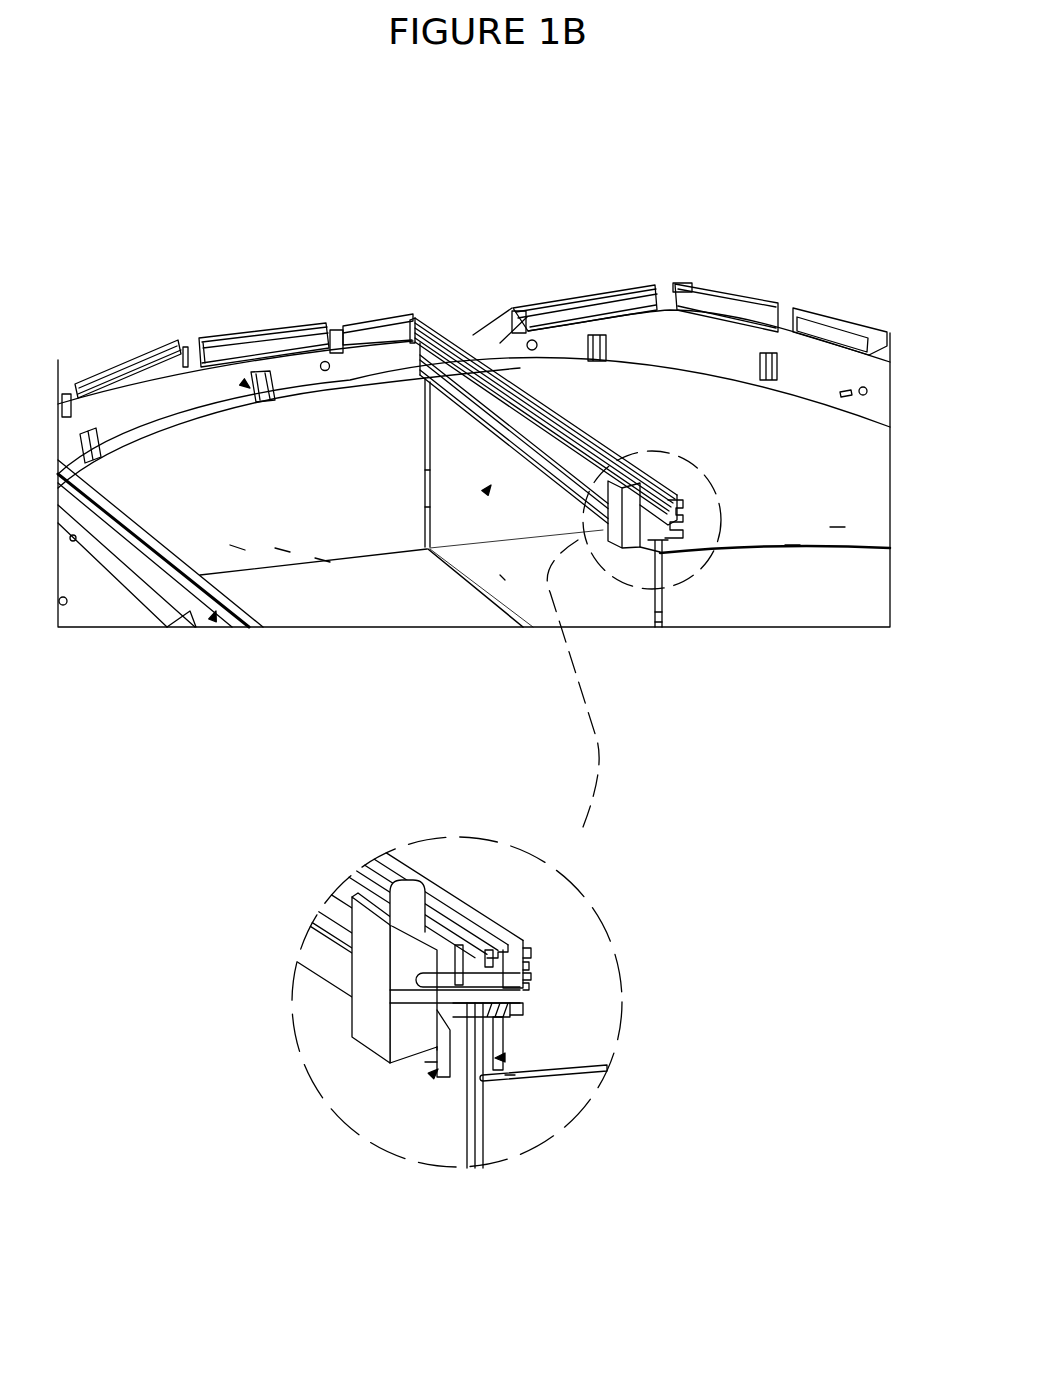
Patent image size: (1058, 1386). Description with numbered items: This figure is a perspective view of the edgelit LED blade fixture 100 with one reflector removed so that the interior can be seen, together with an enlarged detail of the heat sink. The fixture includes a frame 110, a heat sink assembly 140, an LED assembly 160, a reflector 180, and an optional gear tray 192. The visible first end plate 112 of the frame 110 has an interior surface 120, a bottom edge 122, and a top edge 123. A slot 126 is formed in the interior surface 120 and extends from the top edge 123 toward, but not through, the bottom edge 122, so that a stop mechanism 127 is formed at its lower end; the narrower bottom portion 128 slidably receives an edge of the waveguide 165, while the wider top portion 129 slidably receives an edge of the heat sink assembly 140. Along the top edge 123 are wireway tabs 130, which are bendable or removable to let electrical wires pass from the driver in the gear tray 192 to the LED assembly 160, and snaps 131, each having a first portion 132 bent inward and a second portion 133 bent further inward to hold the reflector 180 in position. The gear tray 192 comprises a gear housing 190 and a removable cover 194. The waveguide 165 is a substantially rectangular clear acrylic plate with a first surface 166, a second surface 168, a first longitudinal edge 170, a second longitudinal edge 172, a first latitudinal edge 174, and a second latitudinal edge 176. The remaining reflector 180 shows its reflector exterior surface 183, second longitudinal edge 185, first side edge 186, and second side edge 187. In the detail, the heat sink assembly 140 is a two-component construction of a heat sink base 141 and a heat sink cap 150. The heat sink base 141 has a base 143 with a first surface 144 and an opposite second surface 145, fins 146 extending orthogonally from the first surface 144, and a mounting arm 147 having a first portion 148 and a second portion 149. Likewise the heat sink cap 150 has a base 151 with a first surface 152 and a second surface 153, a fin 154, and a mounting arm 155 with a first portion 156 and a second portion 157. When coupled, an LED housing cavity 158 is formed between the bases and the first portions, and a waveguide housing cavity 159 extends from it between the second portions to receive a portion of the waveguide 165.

The edgelit LED blade fixture 100 is at (725, 195).
The frame 110 is at (757, 345).
The first end plate 112 is at (283, 550).
The interior surface 120 is at (237, 547).
The bottom edge 122 is at (322, 560).
The top edge 123 is at (340, 332).
The slot 126 is at (427, 478).
The stop mechanism 127 is at (428, 552).
The bottom portion of the slot 128 is at (427, 507).
The top portion of the slot 129 is at (410, 395).
The wireway tab 130 is at (283, 335).
The snap 131 is at (250, 388).
The first portion of snap 132 is at (255, 378).
The second portion of snap 133 is at (262, 400).
The heat sink assembly 140 is at (457, 315).
The heat sink base 141 is at (327, 953).
The base 143 is at (437, 1012).
The first surface 144 is at (453, 940).
The second surface 145 is at (590, 1070).
The fins 146 is at (440, 996).
The mounting arm 147 is at (437, 1070).
The first portion of mounting arm 148 is at (437, 1047).
The second portion of mounting arm 149 is at (430, 1062).
The heat sink cap 150 is at (503, 918).
The base 151 is at (525, 988).
The first surface 152 is at (525, 975).
The second surface 153 is at (523, 1002).
The fin 154 is at (523, 950).
The mounting arm 155 is at (567, 1080).
The first portion of mounting arm 156 is at (500, 1058).
The second portion of mounting arm 157 is at (510, 1077).
The LED housing cavity 158 is at (490, 1063).
The waveguide housing cavity 159 is at (662, 605).
The LED assembly 160 is at (490, 485).
The waveguide 165 is at (503, 570).
The first surface 166 is at (487, 557).
The second surface 168 is at (665, 622).
The first longitudinal edge 170 is at (665, 487).
The second longitudinal edge 172 is at (512, 627).
The first latitudinal edge 174 is at (426, 446).
The second latitudinal edge 176 is at (657, 612).
The reflector 180 is at (837, 528).
The reflector exterior surface 183 is at (653, 383).
The second longitudinal edge 185 is at (660, 553).
The first side edge 186 is at (792, 548).
The second side edge 187 is at (683, 364).
The gear housing 190 is at (115, 610).
The gear tray 192 is at (215, 612).
The removable cover 194 is at (112, 568).